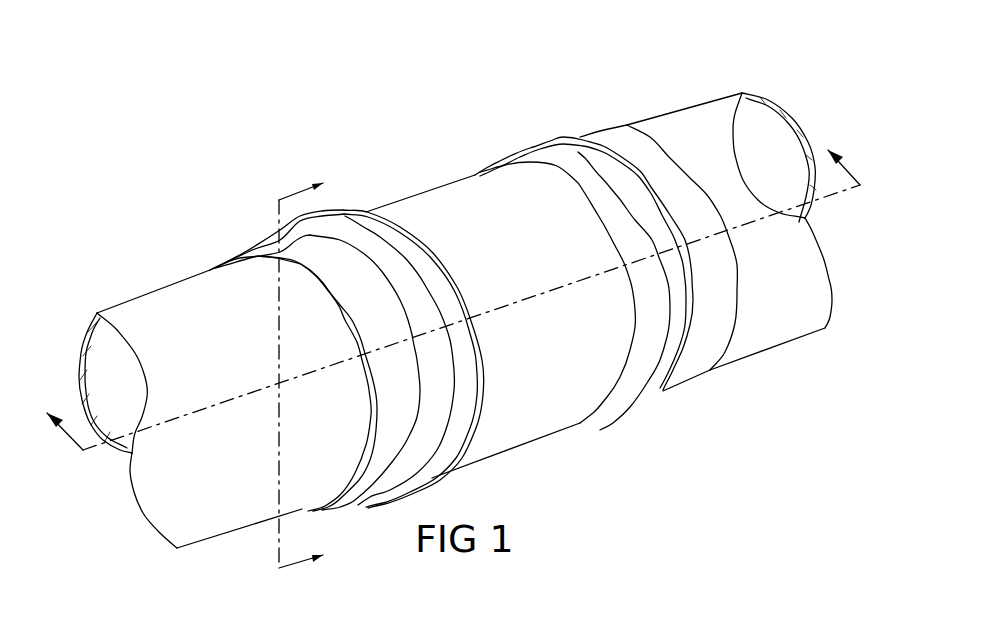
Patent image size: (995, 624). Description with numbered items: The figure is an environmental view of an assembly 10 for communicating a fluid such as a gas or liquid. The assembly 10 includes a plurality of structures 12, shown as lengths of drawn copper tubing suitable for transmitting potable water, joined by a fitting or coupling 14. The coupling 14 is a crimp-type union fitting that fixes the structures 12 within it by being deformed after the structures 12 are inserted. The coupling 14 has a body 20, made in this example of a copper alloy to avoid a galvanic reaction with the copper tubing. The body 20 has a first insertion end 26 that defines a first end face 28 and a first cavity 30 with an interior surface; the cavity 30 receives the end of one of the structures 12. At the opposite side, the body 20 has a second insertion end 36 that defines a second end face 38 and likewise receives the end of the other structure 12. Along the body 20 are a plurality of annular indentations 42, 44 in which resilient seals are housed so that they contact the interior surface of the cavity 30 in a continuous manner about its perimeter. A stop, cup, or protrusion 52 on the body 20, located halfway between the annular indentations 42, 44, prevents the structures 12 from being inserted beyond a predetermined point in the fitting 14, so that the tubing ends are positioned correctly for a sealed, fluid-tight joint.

The assembly 10 is at (700, 70).
The structure 12 is at (163, 302).
The fitting or coupling 14 is at (411, 158).
The body 20 is at (518, 424).
The first insertion end 26 is at (634, 127).
The first end face 28 is at (710, 371).
The first cavity 30 is at (309, 511).
The second insertion end 36 is at (226, 258).
The second end face 38 is at (350, 483).
The annular indentation 42 is at (540, 137).
The annular indentation 44 is at (432, 478).
The protrusion 52 is at (538, 301).